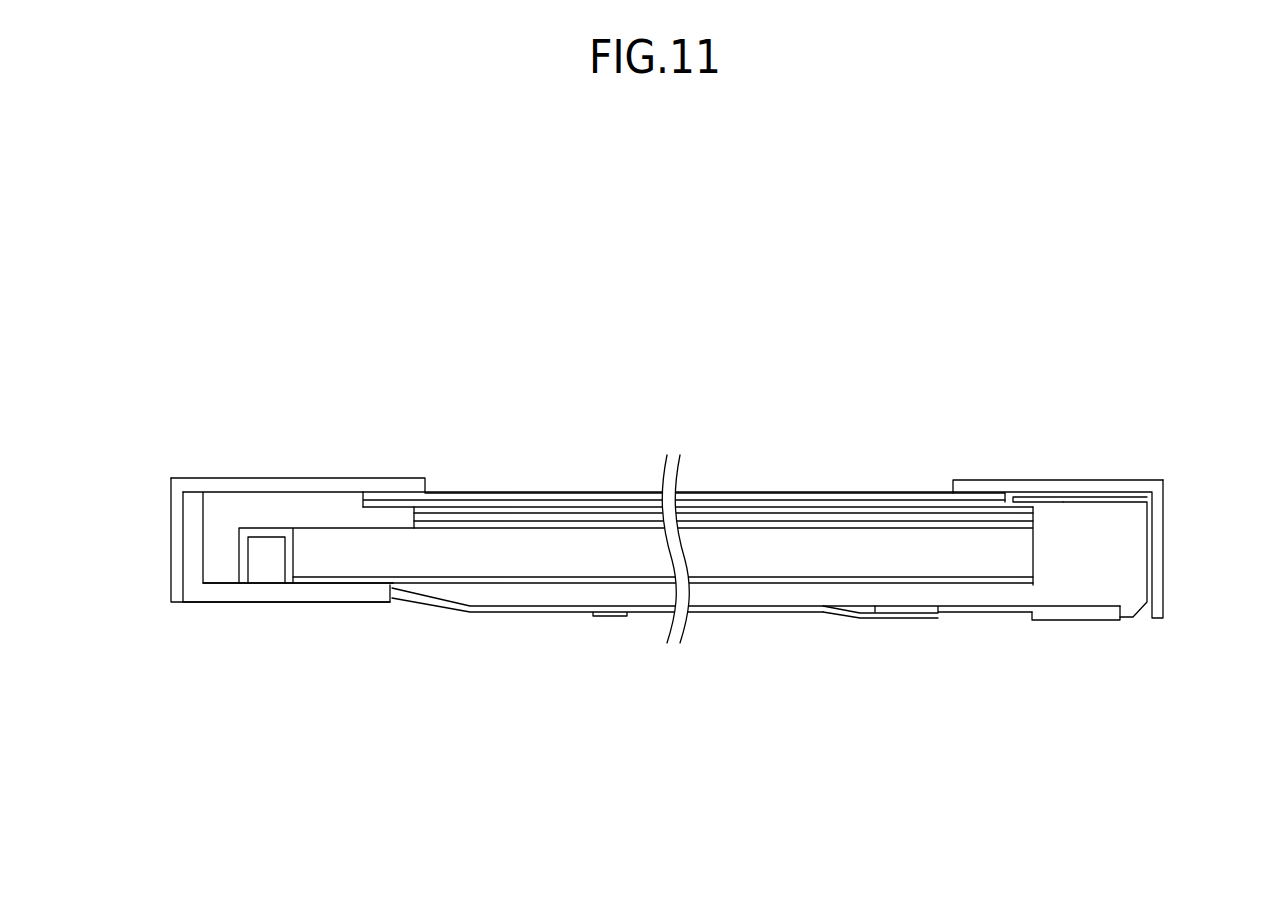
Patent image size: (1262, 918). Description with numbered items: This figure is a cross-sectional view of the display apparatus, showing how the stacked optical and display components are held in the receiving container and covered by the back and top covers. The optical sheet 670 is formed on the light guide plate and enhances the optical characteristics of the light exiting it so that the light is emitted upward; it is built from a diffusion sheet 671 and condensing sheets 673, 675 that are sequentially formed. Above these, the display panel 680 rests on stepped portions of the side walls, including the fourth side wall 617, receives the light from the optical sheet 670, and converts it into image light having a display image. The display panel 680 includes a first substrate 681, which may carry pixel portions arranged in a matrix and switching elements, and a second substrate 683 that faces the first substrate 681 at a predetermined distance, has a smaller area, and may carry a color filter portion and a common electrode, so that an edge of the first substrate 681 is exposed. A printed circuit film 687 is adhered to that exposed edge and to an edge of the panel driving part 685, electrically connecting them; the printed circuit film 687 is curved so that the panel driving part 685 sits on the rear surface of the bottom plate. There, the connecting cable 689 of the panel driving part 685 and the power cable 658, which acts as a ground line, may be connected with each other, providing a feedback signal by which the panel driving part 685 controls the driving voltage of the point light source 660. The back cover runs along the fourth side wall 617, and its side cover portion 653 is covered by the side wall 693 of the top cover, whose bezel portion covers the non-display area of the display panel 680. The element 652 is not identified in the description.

The fourth side wall 617 is at (218, 562).
The bottom chassis 652 is at (332, 592).
The side cover portion 653 is at (185, 520).
The power cable 658 is at (526, 612).
The point light source 660 is at (268, 570).
The optical sheet 670 is at (698, 476).
The diffusion sheet 671 is at (745, 405).
The condensing sheet 673 is at (810, 513).
The condensing sheet 675 is at (761, 507).
The display panel 680 is at (684, 437).
The first substrate 681 is at (475, 405).
The second substrate 683 is at (491, 493).
The panel driving part 685 is at (972, 613).
The printed circuit film 687 is at (1148, 572).
The connecting cable 689 is at (756, 610).
The side wall 693 is at (1164, 532).